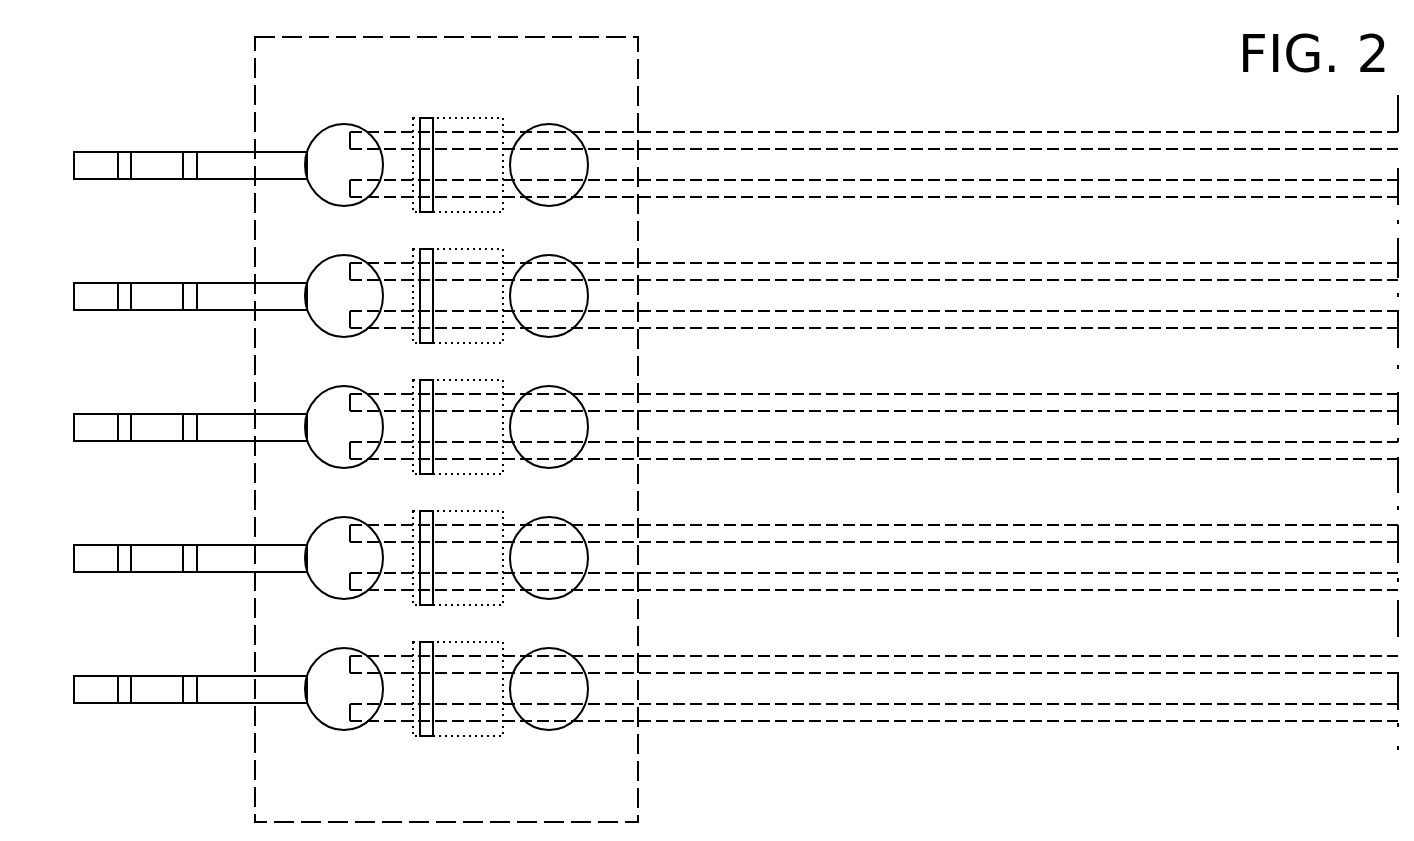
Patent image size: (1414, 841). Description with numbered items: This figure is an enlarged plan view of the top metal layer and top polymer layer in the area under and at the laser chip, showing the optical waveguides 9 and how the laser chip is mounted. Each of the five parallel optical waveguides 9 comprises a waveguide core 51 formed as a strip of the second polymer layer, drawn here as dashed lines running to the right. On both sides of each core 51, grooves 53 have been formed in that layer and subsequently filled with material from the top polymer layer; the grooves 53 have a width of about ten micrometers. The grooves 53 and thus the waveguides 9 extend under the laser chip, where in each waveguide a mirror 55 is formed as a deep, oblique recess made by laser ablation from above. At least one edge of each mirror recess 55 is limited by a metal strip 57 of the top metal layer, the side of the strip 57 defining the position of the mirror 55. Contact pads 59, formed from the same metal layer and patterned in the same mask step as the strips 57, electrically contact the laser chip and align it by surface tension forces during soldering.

The optical waveguide 9 is at (1023, 118).
The waveguide core 51 is at (860, 160).
The groove 53 is at (780, 137).
The mirror 55 is at (490, 118).
The metal strip 57 is at (424, 118).
The contact pad 59 is at (325, 130).